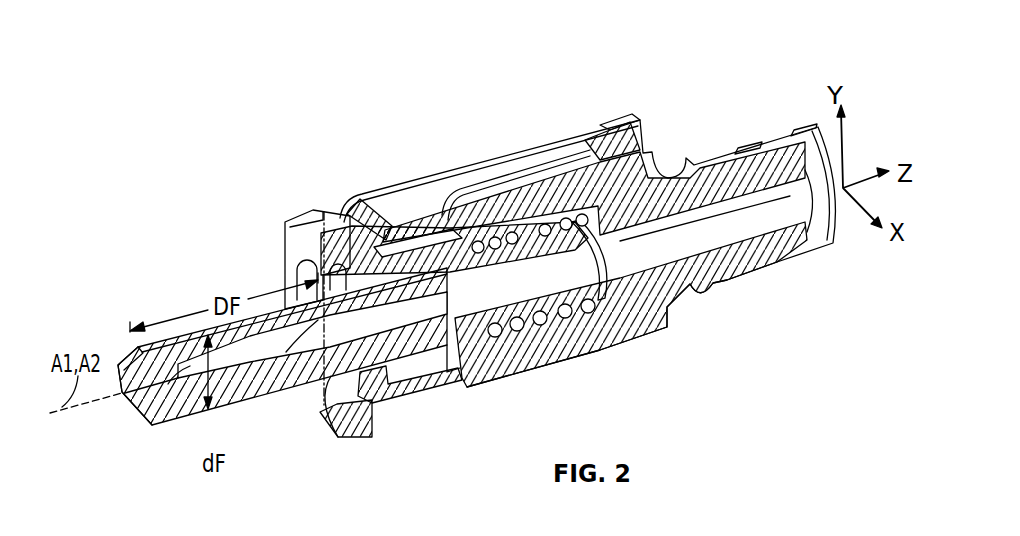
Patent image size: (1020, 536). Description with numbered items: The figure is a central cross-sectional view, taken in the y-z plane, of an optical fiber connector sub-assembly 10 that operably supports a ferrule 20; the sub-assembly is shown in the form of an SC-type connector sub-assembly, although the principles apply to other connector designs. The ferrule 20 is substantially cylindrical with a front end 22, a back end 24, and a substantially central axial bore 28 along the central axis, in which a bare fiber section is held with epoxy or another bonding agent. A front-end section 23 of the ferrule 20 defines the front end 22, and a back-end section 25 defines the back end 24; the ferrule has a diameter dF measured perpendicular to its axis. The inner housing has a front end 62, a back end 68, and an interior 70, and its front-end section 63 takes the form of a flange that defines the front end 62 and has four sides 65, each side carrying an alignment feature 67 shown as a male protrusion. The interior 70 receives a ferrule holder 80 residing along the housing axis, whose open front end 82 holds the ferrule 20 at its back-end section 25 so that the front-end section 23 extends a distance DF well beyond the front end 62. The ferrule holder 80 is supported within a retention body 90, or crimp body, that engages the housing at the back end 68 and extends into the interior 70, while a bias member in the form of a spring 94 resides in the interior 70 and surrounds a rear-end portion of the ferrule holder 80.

The connector sub-assembly 10 is at (464, 278).
The ferrule 20 is at (340, 308).
The front end 22 is at (128, 417).
The front-end section 23 is at (232, 432).
The back end 24 is at (527, 374).
The back-end section 25 is at (373, 285).
The axial bore 28 is at (168, 384).
The front end 62 is at (286, 230).
The front-end section 63 is at (336, 190).
The sides 65 is at (303, 222).
The alignment feature 67 is at (319, 215).
The back end 68 is at (632, 124).
The interior 70 is at (459, 384).
The ferrule holder 80 is at (410, 240).
The open front end 82 is at (372, 404).
The retention body 90 is at (513, 210).
The spring 94 is at (540, 183).